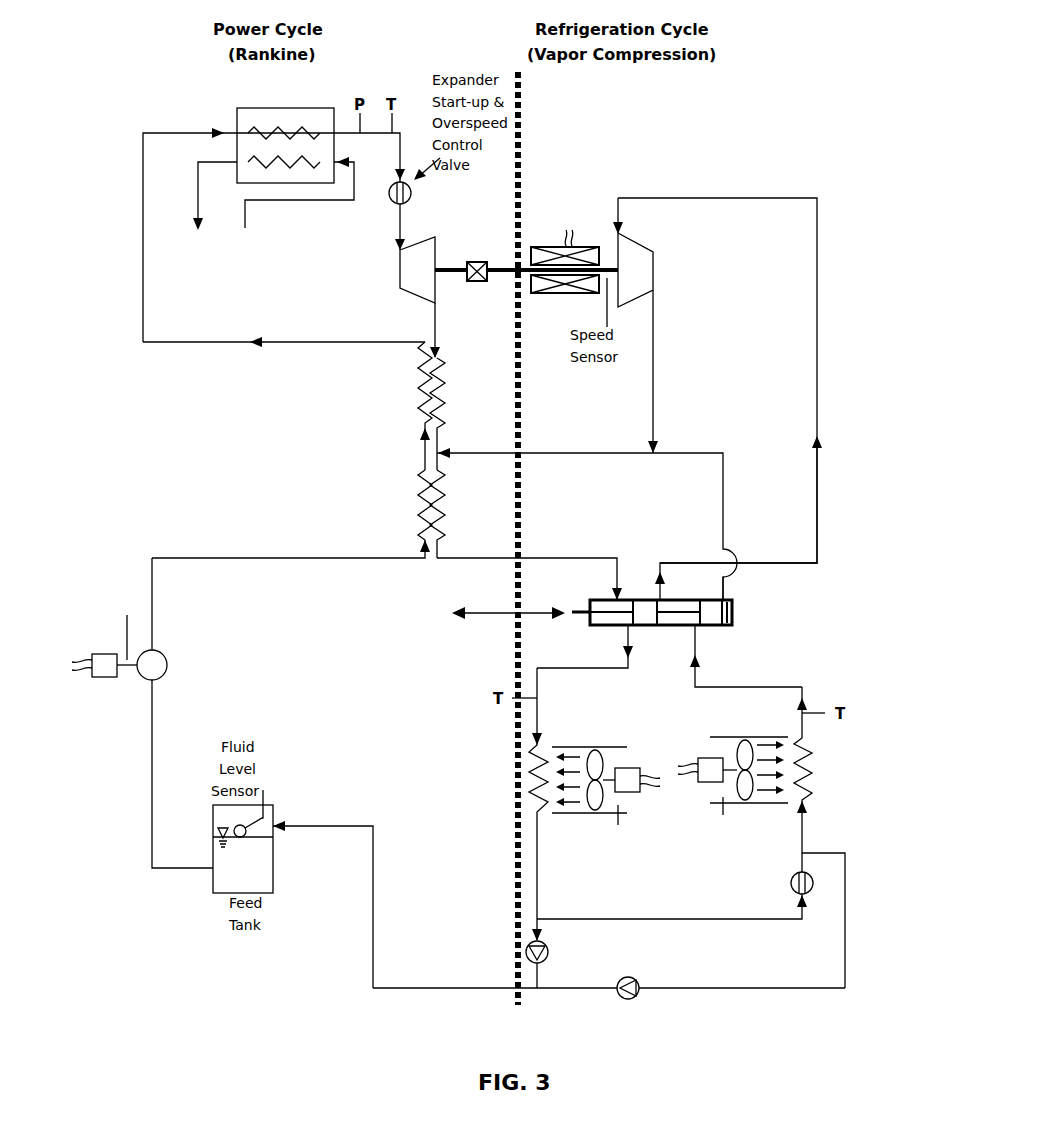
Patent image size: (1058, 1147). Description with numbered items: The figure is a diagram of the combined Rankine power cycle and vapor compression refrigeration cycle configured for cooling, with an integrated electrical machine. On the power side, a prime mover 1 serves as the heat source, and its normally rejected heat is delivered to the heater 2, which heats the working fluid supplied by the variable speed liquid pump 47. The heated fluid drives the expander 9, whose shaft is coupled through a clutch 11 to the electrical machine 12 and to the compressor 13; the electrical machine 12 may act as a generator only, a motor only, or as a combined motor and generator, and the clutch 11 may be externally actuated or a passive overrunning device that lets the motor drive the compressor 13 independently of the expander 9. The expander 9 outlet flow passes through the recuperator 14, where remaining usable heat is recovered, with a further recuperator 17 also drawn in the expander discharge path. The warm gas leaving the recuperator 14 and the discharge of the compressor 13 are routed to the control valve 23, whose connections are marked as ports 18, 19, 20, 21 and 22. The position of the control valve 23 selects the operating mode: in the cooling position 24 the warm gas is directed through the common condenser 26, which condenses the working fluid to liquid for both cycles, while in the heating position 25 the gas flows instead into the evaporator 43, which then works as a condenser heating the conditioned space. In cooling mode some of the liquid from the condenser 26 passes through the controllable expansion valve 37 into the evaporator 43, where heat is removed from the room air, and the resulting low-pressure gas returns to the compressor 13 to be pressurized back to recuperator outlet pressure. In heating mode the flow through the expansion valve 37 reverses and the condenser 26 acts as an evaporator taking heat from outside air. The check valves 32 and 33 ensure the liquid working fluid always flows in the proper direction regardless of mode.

The prime mover 1 is at (268, 213).
The heater 2 is at (285, 136).
The expander 9 is at (371, 297).
The clutch 11 is at (477, 299).
The electrical machine 12 is at (582, 236).
The compressor 13 is at (694, 325).
The recuperator 14 is at (371, 406).
The recuperator 17 is at (298, 514).
The line to five-way valve 18 is at (529, 570).
The five-way valve port 19 is at (737, 588).
The five-way valve port to condenser 20 is at (597, 646).
The five-way valve port to evaporator 21 is at (746, 656).
The line to compressor inlet 22 is at (738, 501).
The control valve 23 is at (723, 612).
The cooling position 24 is at (553, 599).
The heating position 25 is at (463, 599).
The condenser 26 is at (529, 804).
The check valve 32 is at (486, 958).
The check valve 33 is at (625, 968).
The controllable expansion valve 37 is at (691, 920).
The evaporator 43 is at (801, 779).
The variable speed liquid pump 47 is at (156, 713).